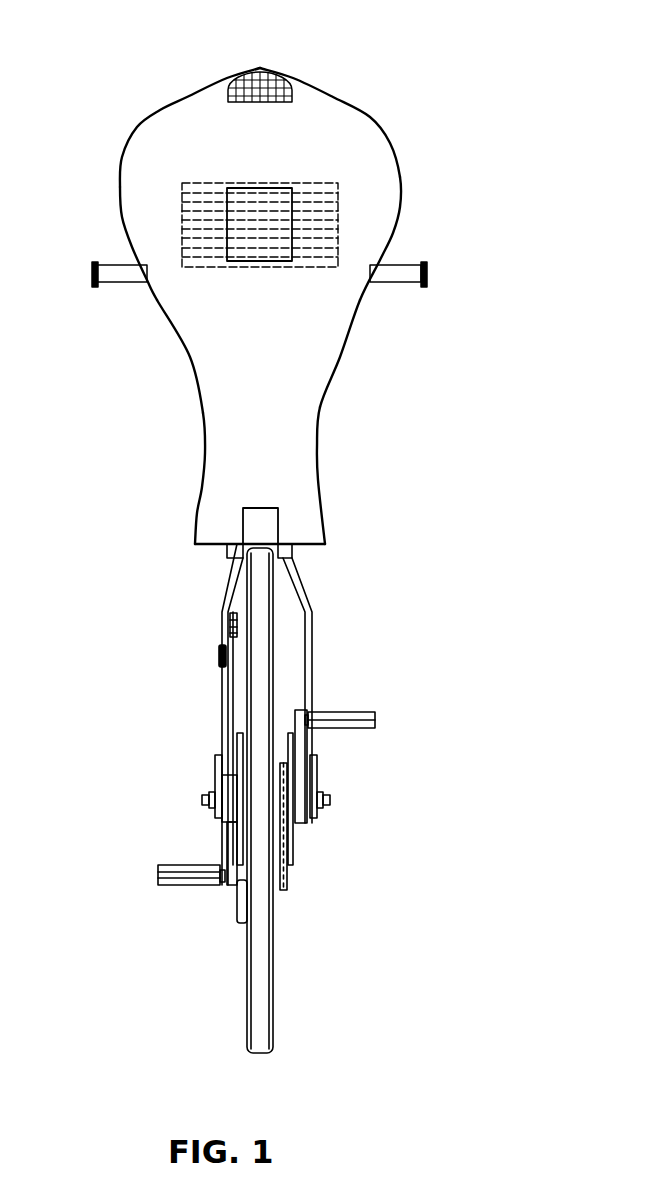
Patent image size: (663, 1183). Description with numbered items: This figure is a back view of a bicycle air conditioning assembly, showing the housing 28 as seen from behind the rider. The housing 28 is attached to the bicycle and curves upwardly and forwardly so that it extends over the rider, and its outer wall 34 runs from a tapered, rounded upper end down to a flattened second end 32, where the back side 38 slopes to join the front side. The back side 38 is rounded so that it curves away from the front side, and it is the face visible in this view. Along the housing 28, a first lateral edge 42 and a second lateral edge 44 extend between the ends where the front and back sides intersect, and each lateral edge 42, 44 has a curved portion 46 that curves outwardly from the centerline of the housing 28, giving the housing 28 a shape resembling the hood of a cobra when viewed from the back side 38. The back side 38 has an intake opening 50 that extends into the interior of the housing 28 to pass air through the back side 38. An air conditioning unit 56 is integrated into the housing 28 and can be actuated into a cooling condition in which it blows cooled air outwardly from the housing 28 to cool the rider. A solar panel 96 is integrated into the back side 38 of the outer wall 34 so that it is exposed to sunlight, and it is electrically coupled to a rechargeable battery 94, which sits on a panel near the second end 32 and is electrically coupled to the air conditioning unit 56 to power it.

The housing 28 is at (372, 113).
The second end 32 is at (213, 547).
The outer wall 34 is at (302, 393).
The back side 38 is at (202, 348).
The first lateral edge 42 is at (162, 312).
The second lateral edge 44 is at (320, 482).
The curved portion 46 is at (127, 138).
The intake opening 50 is at (245, 183).
The air conditioning unit 56 is at (305, 183).
The rechargeable battery 94 is at (242, 525).
The solar panel 96 is at (263, 80).